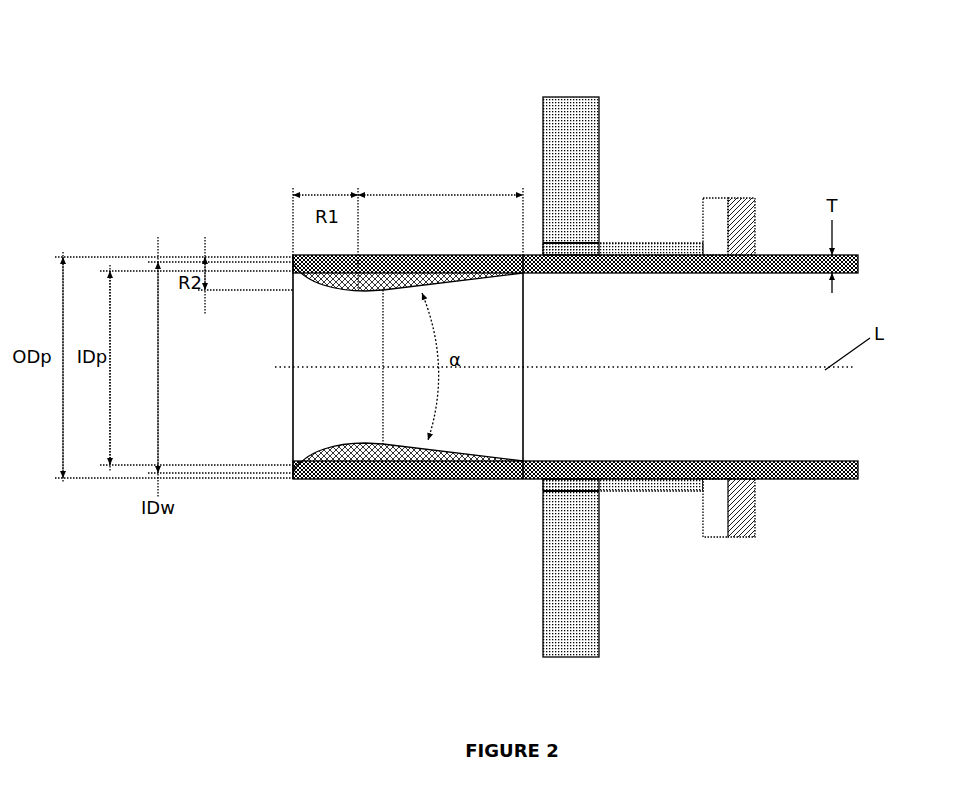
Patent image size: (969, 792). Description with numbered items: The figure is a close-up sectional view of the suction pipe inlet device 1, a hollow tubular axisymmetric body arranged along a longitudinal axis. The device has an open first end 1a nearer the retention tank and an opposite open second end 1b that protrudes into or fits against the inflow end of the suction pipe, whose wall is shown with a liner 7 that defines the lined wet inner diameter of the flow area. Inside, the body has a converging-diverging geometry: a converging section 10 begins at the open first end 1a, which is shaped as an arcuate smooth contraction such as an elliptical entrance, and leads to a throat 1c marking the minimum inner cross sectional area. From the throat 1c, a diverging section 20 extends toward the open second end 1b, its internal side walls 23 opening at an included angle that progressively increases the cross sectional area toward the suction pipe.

The suction pipe inlet device 1 is at (413, 343).
The open first end 1a is at (293, 383).
The open second end 1b is at (524, 332).
The throat 1c is at (358, 288).
The liner 7 is at (760, 263).
The converging section 10 is at (325, 192).
The diverging section 20 is at (433, 192).
The internal side walls 23 is at (460, 457).